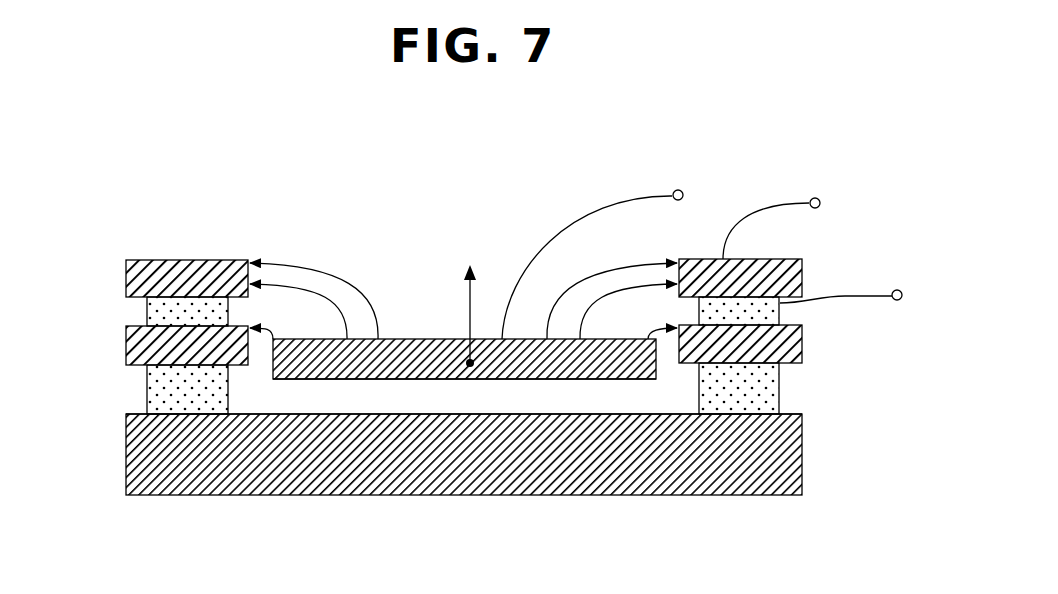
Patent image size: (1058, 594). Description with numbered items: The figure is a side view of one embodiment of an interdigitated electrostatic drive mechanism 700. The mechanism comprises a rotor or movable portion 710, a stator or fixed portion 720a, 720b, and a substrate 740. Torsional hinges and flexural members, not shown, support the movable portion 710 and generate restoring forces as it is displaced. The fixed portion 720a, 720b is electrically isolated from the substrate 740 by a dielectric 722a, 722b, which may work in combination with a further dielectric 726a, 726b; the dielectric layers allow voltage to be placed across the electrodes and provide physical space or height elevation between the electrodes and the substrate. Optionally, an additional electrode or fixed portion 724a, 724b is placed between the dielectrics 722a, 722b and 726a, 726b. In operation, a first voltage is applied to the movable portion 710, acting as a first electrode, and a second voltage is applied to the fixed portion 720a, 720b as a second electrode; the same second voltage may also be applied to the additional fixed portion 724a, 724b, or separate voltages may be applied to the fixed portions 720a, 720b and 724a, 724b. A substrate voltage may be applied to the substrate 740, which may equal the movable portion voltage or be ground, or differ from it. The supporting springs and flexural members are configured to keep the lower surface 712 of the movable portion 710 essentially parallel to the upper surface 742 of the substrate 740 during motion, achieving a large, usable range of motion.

The interdigitated electrostatic drive mechanism 700 is at (203, 118).
The movable portion 710 is at (405, 339).
The lower surface 712 is at (490, 379).
The fixed portion 720a is at (786, 259).
The fixed portion 720b is at (140, 260).
The dielectric 722a is at (779, 318).
The dielectric 722b is at (147, 310).
The additional electrode or fixed portion 724a is at (802, 345).
The additional electrode or fixed portion 724b is at (126, 328).
The dielectric 726a is at (779, 376).
The dielectric 726b is at (147, 380).
The substrate 740 is at (802, 446).
The upper surface 742 is at (781, 411).